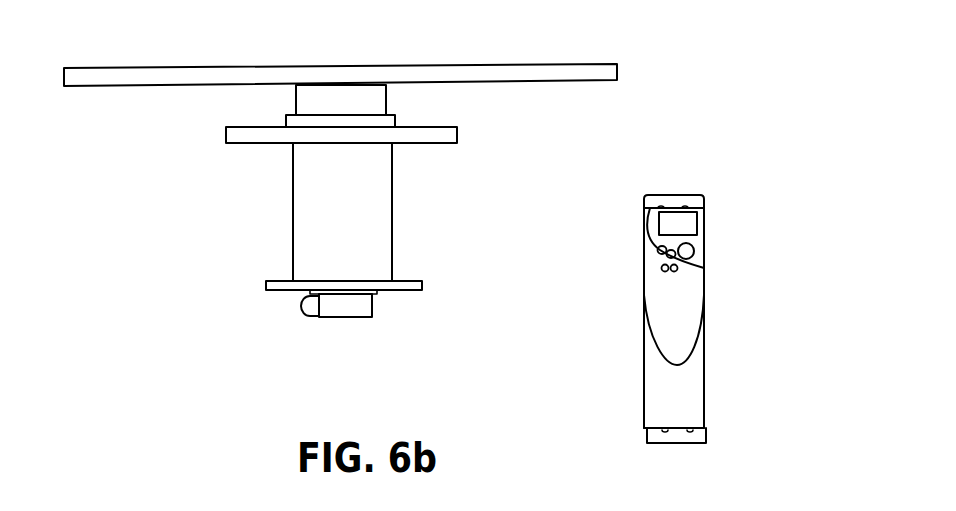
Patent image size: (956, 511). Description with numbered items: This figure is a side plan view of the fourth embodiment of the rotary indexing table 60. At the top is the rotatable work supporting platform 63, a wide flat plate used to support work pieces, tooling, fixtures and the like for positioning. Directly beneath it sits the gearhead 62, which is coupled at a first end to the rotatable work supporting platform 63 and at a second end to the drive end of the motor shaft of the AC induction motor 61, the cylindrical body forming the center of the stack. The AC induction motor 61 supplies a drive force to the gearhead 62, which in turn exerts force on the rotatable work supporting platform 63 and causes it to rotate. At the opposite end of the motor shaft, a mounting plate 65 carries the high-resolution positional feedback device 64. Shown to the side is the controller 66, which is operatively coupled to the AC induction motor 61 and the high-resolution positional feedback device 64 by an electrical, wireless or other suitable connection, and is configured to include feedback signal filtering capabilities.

The rotary indexing table 60 is at (711, 98).
The AC induction motor 61 is at (378, 184).
The gearhead 62 is at (369, 101).
The rotatable work supporting platform 63 is at (572, 69).
The high-resolution positional feedback device 64 is at (352, 309).
The mounting plate 65 is at (418, 280).
The controller 66 is at (696, 286).